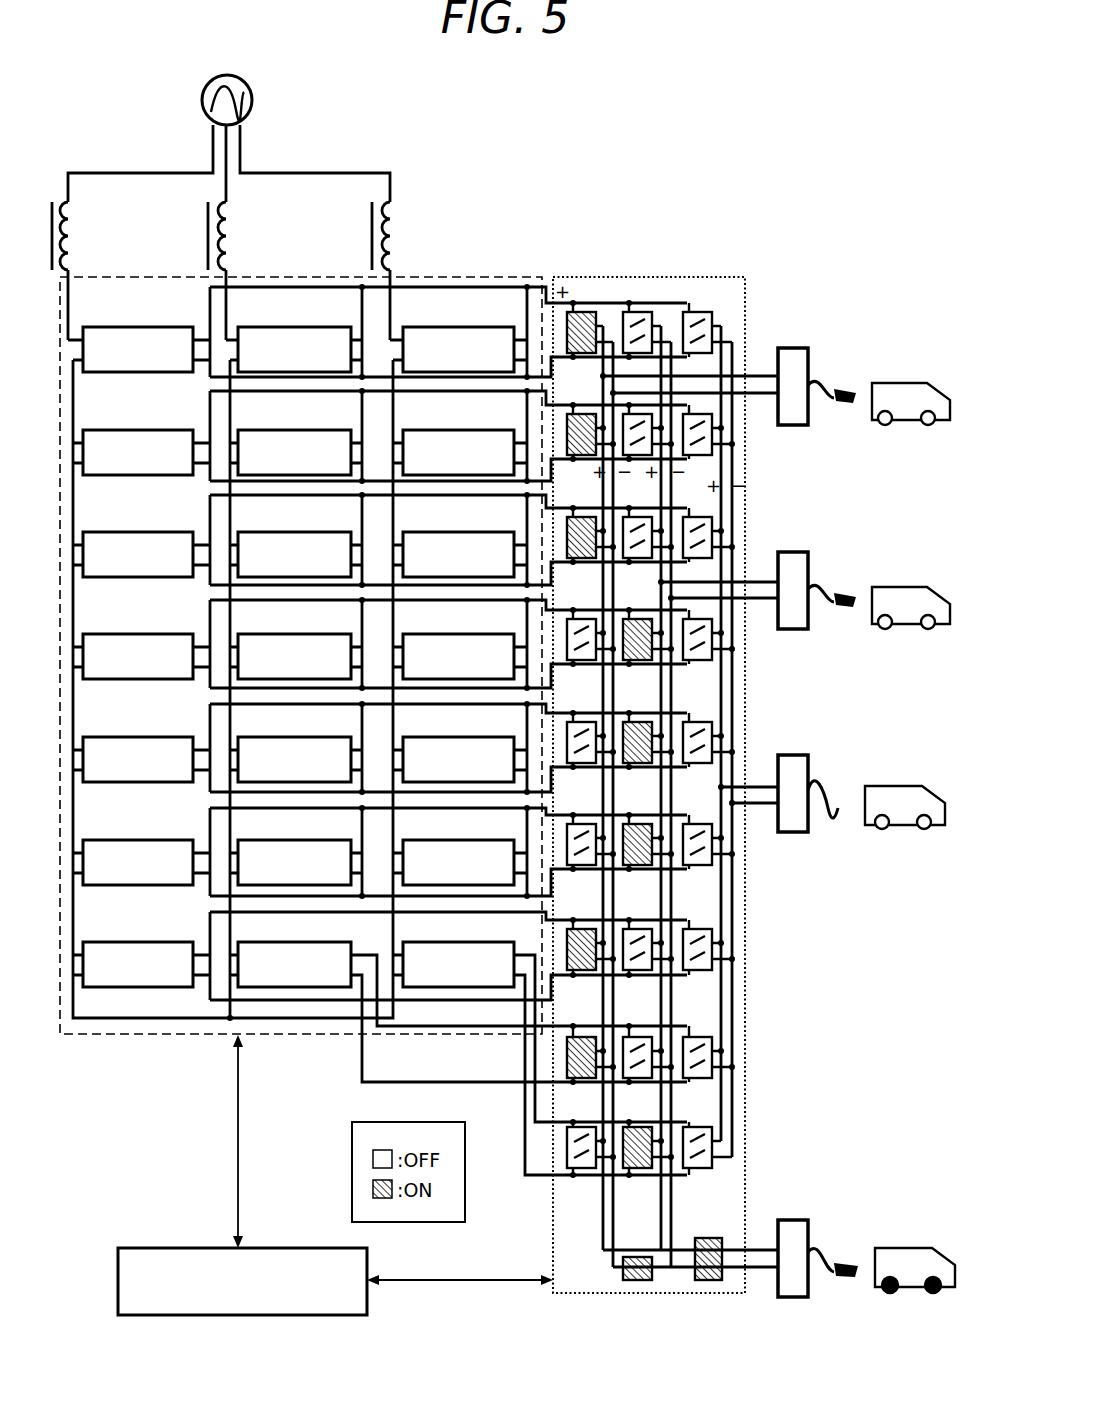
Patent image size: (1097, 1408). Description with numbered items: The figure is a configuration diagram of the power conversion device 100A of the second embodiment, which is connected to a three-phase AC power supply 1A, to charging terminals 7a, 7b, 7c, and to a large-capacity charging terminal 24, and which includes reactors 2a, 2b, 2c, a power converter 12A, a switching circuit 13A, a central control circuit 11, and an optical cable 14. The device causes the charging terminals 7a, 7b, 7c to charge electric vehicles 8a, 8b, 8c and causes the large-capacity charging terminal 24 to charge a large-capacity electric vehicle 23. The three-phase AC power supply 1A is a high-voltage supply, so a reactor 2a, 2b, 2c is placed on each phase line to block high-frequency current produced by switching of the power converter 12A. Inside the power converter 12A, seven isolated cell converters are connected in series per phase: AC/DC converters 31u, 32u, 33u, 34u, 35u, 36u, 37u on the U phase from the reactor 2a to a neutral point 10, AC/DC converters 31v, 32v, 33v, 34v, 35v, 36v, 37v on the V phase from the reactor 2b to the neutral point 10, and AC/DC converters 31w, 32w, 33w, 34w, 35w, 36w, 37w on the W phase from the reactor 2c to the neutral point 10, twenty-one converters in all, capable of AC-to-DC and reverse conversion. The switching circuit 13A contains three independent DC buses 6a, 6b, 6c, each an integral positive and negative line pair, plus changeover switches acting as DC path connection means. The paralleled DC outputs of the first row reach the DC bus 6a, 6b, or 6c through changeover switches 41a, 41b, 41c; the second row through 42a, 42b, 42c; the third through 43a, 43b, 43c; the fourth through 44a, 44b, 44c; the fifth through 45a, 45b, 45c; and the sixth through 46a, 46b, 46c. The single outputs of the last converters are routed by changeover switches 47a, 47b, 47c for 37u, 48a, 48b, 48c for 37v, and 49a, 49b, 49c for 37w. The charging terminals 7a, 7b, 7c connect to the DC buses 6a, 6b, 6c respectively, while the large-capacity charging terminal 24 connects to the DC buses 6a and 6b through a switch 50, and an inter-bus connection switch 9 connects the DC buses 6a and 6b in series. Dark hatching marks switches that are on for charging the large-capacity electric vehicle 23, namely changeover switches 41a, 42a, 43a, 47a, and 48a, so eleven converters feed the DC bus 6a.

The three-phase AC power supply 1A is at (243, 83).
The reactor 2a is at (67, 219).
The reactor 2b is at (228, 250).
The reactor 2c is at (385, 215).
The DC bus 6a is at (605, 323).
The DC bus 6b is at (662, 323).
The DC bus 6c is at (722, 323).
The charging terminal 7a is at (798, 347).
The charging terminal 7b is at (798, 551).
The charging terminal 7c is at (795, 755).
The electric vehicle 8a is at (895, 383).
The electric vehicle 8b is at (895, 587).
The electric vehicle 8c is at (903, 787).
The inter-bus connection switch 9 is at (625, 1283).
The neutral point 10 is at (173, 1030).
The central control circuit 11 is at (277, 1315).
The power converter 12A is at (100, 1033).
The switching circuit 13A is at (550, 1202).
The optical cable 14 is at (237, 1170).
The large-capacity electric vehicle 23 is at (895, 1248).
The large-capacity charging terminal 24 is at (792, 1218).
The AC/DC converter 31u is at (105, 325).
The AC/DC converter 31v is at (263, 325).
The AC/DC converter 31w is at (433, 325).
The AC/DC converter 32u is at (105, 428).
The AC/DC converter 32v is at (263, 428).
The AC/DC converter 32w is at (433, 428).
The AC/DC converter 33u is at (105, 530).
The AC/DC converter 33v is at (263, 530).
The AC/DC converter 33w is at (433, 530).
The AC/DC converter 34u is at (105, 632).
The AC/DC converter 34v is at (263, 632).
The AC/DC converter 34w is at (433, 632).
The AC/DC converter 35u is at (105, 735).
The AC/DC converter 35v is at (263, 735).
The AC/DC converter 35w is at (433, 735).
The AC/DC converter 36u is at (105, 838).
The AC/DC converter 36v is at (263, 838).
The AC/DC converter 36w is at (433, 838).
The AC/DC converter 37u is at (105, 940).
The AC/DC converter 37v is at (263, 940).
The AC/DC converter 37w is at (433, 940).
The changeover switch 41a is at (580, 311).
The changeover switch 41b is at (636, 311).
The changeover switch 41c is at (695, 311).
The changeover switch 42a is at (591, 413).
The changeover switch 42b is at (652, 455).
The changeover switch 42c is at (713, 449).
The changeover switch 43a is at (588, 517).
The changeover switch 43b is at (646, 517).
The changeover switch 43c is at (712, 530).
The changeover switch 44a is at (588, 619).
The changeover switch 44b is at (646, 619).
The changeover switch 44c is at (712, 637).
The changeover switch 45a is at (588, 722).
The changeover switch 45b is at (646, 722).
The changeover switch 45c is at (706, 722).
The changeover switch 46a is at (588, 824).
The changeover switch 46b is at (646, 824).
The changeover switch 46c is at (706, 824).
The changeover switch 47a is at (588, 929).
The changeover switch 47b is at (646, 929).
The changeover switch 47c is at (706, 929).
The changeover switch 48a is at (588, 1037).
The changeover switch 48b is at (646, 1037).
The changeover switch 48c is at (706, 1037).
The changeover switch 49a is at (588, 1127).
The changeover switch 49b is at (646, 1127).
The changeover switch 49c is at (706, 1127).
The switch 50 is at (700, 1283).
The power conversion device 100A is at (524, 146).